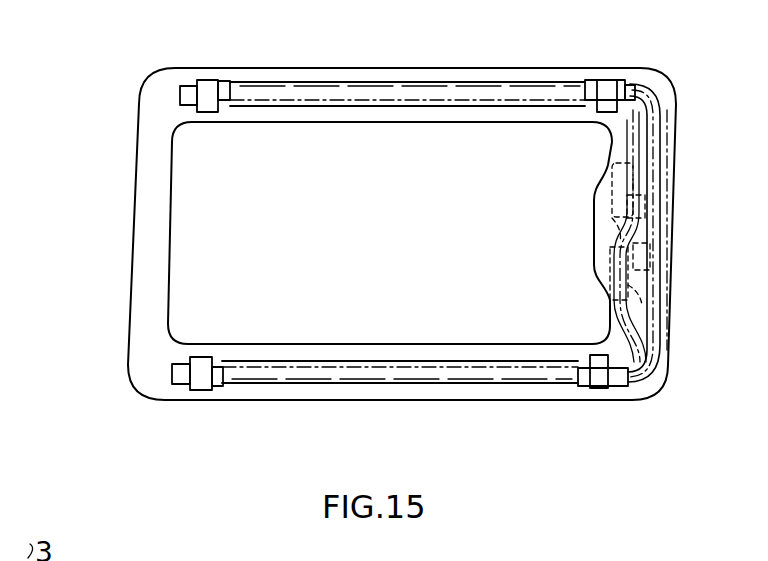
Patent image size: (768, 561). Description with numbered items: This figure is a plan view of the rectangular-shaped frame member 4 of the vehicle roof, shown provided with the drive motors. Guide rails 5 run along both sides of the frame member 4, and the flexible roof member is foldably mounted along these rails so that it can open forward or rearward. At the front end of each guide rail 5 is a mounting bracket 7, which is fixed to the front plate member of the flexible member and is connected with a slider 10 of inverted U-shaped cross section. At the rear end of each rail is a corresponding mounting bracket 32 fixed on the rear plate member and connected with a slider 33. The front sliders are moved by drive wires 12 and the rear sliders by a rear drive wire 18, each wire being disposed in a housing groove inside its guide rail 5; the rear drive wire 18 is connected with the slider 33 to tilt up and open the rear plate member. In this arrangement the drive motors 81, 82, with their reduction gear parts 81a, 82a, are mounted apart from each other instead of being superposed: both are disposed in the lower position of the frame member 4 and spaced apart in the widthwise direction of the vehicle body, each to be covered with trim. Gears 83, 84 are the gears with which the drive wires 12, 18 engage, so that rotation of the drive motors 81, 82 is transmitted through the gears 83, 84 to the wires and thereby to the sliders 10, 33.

The frame member 4 is at (128, 346).
The guide rail 5 is at (372, 82).
The mounting bracket 7 is at (206, 88).
The slider 10 is at (226, 88).
The drive wire 12 is at (288, 102).
The rear drive wire 18 is at (662, 96).
The mounting bracket 32 is at (605, 85).
The slider 33 is at (592, 80).
The drive motor 81 is at (642, 305).
The reduction gear part 81a is at (610, 264).
The drive motor 82 is at (612, 186).
The reduction gear part 82a is at (647, 200).
The gear 83 is at (652, 256).
The gear 84 is at (618, 226).